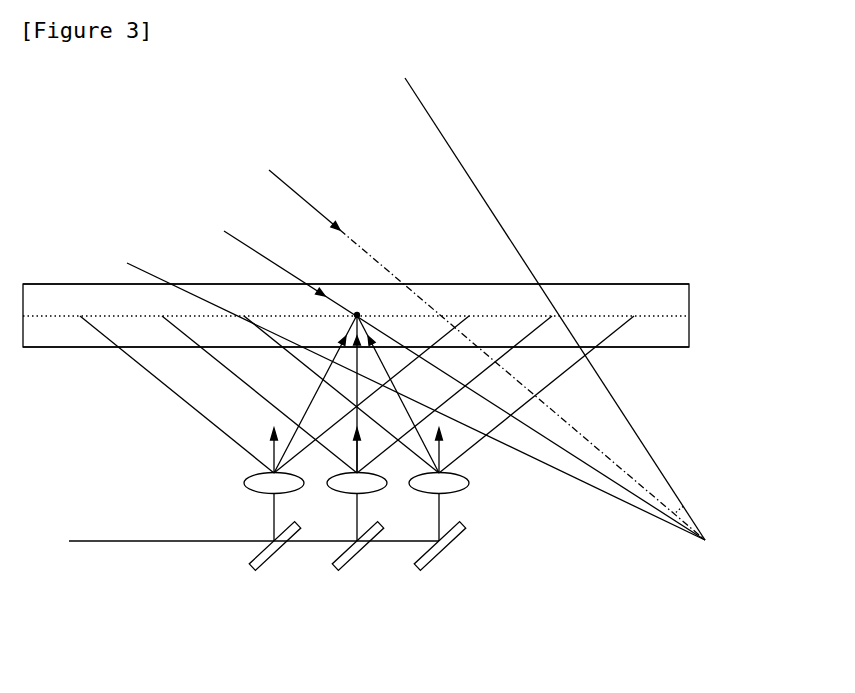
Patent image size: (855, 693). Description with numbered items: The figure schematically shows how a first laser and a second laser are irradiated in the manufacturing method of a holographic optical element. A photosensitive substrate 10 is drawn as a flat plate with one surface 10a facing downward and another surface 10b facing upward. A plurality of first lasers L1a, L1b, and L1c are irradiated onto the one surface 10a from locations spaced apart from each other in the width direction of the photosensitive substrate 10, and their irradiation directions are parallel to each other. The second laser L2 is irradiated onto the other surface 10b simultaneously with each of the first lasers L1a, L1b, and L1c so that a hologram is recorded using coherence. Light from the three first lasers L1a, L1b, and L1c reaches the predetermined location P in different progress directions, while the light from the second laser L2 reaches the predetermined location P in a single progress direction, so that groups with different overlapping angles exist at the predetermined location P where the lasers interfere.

The photosensitive substrate 10 is at (714, 316).
The one surface of the photosensitive substrate 10a is at (640, 347).
The another surface of the photosensitive substrate 10b is at (640, 284).
The predetermined location P is at (364, 303).
The second laser L2 is at (515, 233).
The first laser L1a is at (274, 394).
The first laser L1b is at (218, 362).
The first laser L1c is at (480, 443).